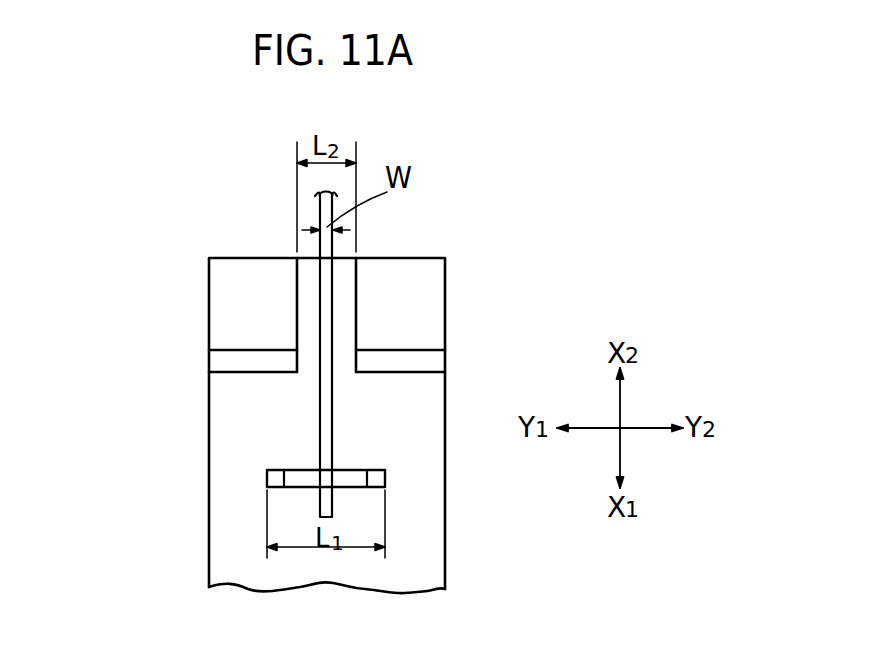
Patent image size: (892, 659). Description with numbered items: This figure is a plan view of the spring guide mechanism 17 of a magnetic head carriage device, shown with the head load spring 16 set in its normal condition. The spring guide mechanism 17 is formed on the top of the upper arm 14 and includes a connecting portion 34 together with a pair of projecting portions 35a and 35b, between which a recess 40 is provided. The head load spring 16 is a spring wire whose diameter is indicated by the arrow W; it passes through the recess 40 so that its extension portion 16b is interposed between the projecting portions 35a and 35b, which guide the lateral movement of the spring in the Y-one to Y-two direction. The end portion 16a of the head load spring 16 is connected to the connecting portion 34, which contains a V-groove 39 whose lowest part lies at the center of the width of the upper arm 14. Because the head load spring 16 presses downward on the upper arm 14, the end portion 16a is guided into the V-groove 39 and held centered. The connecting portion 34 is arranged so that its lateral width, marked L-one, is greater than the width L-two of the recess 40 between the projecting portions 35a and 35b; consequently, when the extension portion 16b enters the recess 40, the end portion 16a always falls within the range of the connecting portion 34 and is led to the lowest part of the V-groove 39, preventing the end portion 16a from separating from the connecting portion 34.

The upper arm 14 is at (445, 395).
The head load spring 16 is at (333, 317).
The end portion of the head load spring 16a is at (330, 510).
The extension portion of the head load spring 16b is at (332, 396).
The spring guide mechanism 17 is at (334, 371).
The connecting portion 34 is at (290, 462).
The projecting portion 35a is at (420, 311).
The projecting portion 35b is at (245, 311).
The V-groove 39 is at (349, 478).
The recess 40 is at (308, 362).